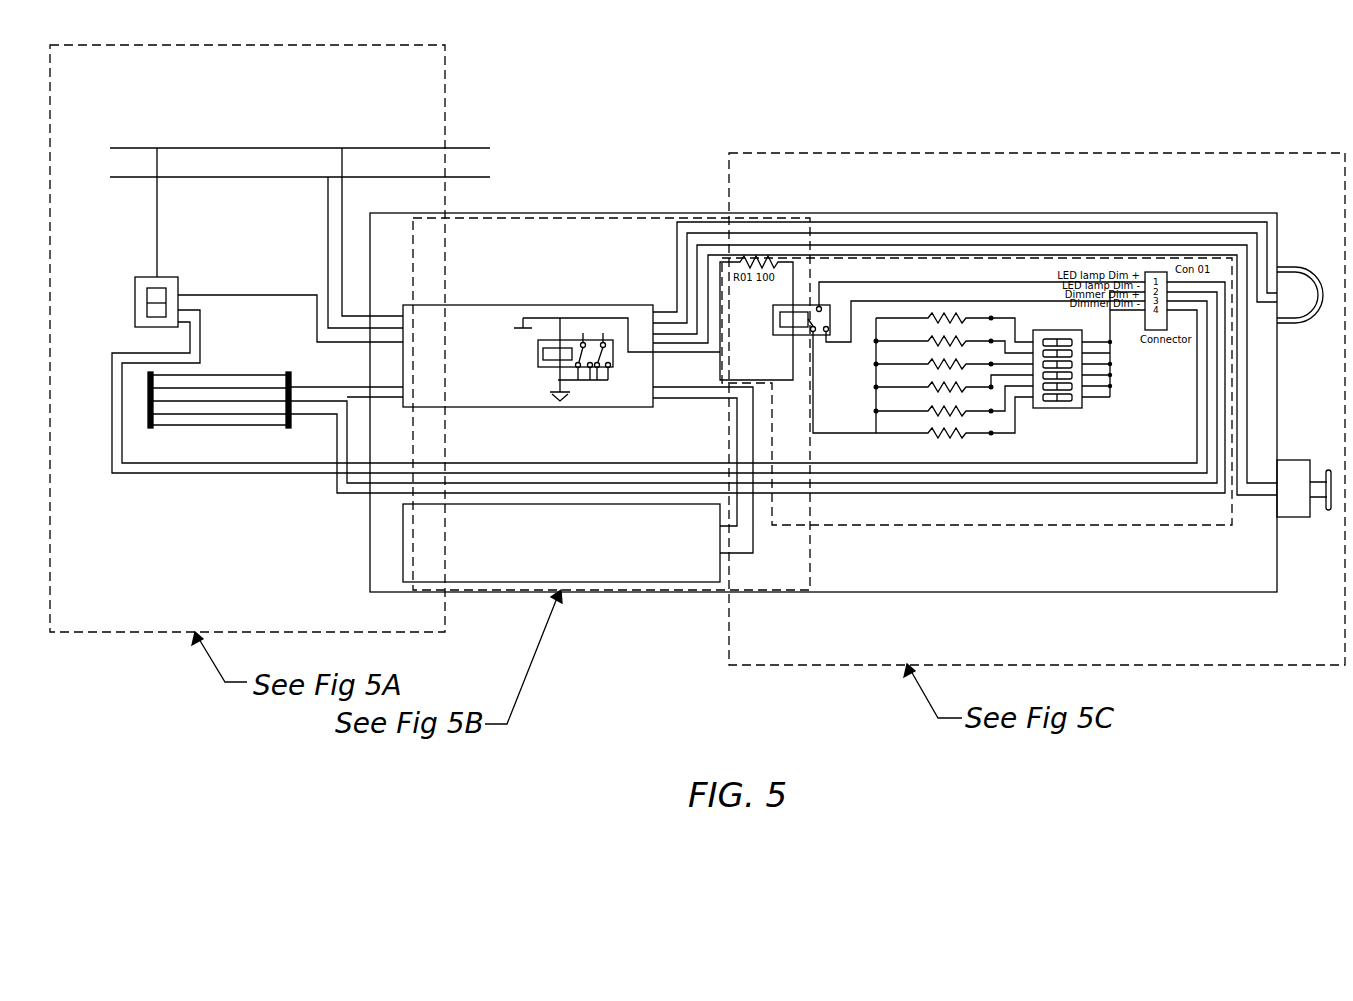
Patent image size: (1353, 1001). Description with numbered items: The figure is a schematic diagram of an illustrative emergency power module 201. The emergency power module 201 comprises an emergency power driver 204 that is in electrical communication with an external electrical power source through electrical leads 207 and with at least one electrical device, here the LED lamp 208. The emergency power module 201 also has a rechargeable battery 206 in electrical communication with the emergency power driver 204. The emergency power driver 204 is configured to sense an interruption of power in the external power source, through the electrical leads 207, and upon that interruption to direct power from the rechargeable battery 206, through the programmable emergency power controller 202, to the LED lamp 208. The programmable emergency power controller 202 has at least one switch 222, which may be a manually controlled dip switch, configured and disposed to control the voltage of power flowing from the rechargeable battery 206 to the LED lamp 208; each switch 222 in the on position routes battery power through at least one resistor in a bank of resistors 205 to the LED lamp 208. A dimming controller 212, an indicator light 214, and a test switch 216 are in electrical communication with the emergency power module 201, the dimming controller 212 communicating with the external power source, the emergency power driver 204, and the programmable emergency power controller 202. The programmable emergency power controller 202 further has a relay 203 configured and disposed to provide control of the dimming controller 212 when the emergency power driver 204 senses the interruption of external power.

The emergency power module 201 is at (697, 210).
The programmable emergency power controller 202 is at (1140, 525).
The relay 203 is at (803, 305).
The emergency power driver 204 is at (573, 305).
The bank of resistors 205 is at (934, 440).
The rechargeable battery 206 is at (646, 568).
The electrical leads 207 is at (137, 177).
The LED lamp 208 is at (182, 424).
The dimming controller 212 is at (145, 300).
The indicator light 214 is at (1293, 293).
The test switch 216 is at (1293, 507).
The switch 222 is at (1037, 330).